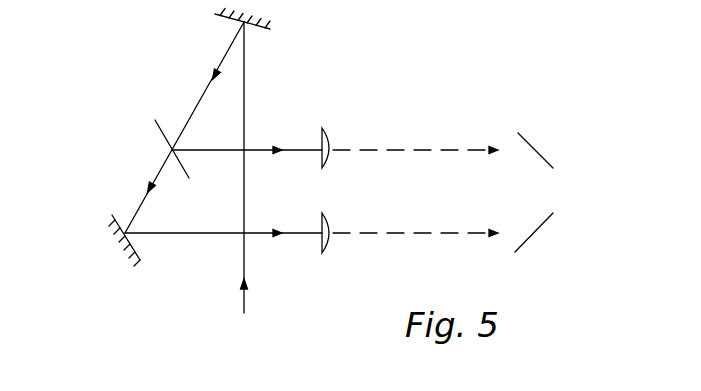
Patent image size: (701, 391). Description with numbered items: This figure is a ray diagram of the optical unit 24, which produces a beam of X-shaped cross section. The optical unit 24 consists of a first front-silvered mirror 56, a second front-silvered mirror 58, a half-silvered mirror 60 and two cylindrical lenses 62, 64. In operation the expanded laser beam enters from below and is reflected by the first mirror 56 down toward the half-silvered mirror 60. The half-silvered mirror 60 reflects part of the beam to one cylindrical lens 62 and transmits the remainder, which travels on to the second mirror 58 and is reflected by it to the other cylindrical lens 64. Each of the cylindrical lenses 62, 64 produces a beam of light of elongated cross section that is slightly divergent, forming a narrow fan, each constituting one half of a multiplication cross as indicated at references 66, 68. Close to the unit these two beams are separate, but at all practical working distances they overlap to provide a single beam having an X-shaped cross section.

The optical unit 24 is at (128, 88).
The first front-silvered mirror 56 is at (228, 19).
The second front-silvered mirror 58 is at (114, 214).
The half-silvered mirror 60 is at (158, 121).
The cylindrical lens 62 is at (327, 140).
The cylindrical lens 64 is at (327, 242).
The half of multiplication cross 66 is at (535, 143).
The half of multiplication cross 68 is at (532, 235).